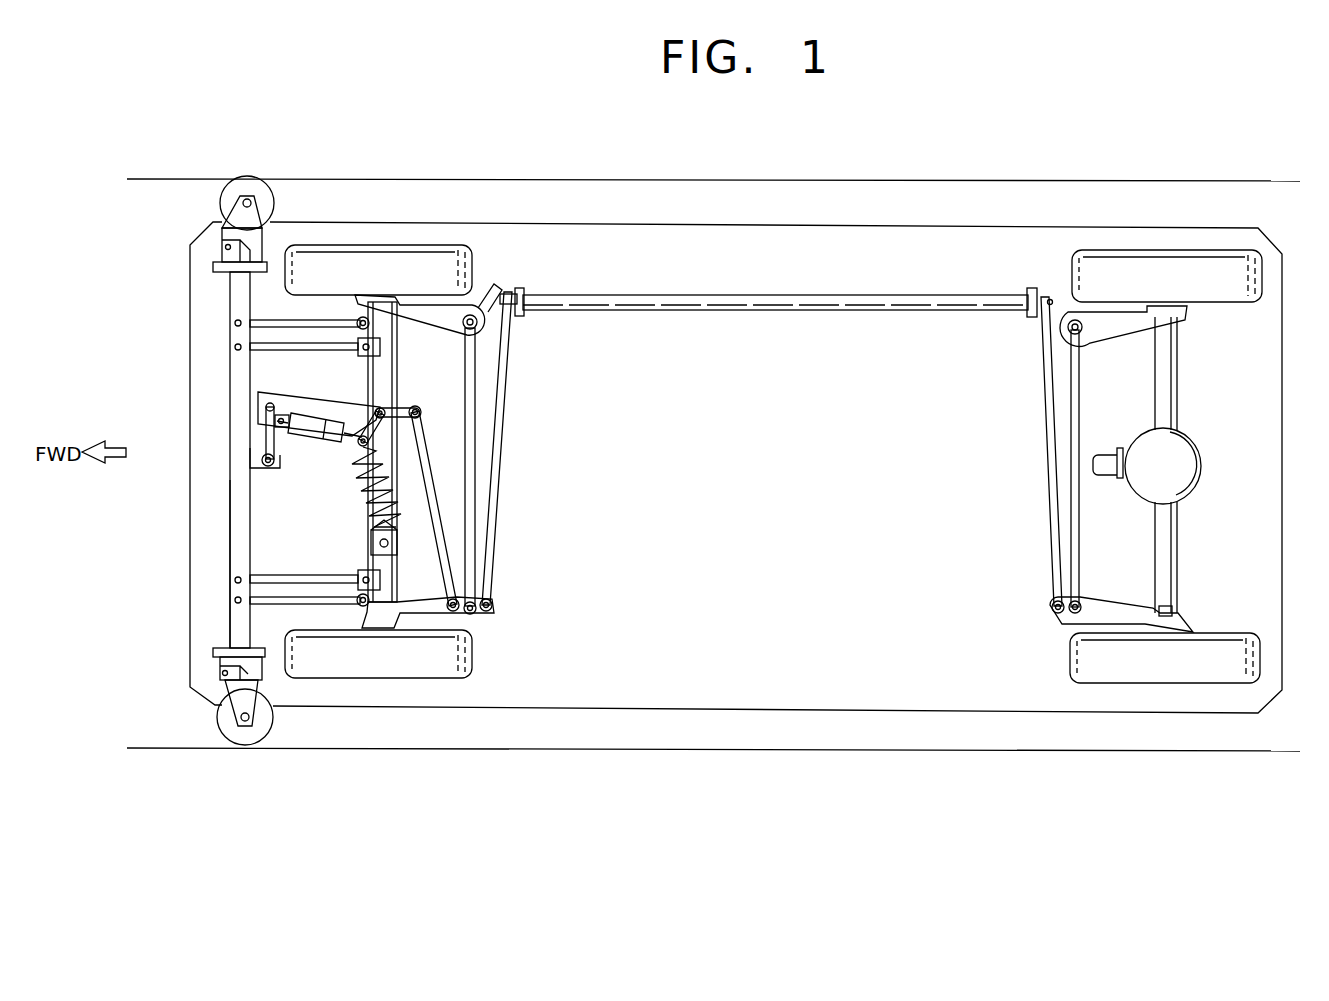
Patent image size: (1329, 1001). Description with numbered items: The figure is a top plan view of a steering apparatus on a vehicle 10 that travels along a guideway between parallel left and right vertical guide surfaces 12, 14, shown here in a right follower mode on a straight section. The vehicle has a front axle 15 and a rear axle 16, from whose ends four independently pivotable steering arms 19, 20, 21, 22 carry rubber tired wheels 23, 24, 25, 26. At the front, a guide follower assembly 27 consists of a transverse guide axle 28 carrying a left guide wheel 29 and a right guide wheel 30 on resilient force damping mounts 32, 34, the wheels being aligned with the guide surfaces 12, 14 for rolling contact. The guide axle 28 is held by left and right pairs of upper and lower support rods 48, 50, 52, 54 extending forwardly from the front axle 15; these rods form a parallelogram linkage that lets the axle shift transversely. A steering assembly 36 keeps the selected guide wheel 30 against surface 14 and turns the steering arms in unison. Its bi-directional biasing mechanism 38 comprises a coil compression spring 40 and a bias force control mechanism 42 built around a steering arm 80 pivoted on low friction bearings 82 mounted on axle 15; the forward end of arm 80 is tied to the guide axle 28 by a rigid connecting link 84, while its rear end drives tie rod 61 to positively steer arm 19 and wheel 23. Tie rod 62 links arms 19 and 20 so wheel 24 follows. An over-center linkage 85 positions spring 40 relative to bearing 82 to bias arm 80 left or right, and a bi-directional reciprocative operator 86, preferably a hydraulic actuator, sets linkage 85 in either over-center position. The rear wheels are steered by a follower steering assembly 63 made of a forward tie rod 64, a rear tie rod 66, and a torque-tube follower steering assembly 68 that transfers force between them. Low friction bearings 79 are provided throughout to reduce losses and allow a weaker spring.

The vehicle 10 is at (873, 218).
The left vertical guide surface 12 is at (545, 750).
The right vertical guide surface 14 is at (512, 176).
The front axle 15 is at (397, 574).
The rear axle 16 is at (1178, 527).
The steering arm 19 is at (486, 611).
The steering arm 20 is at (497, 291).
The steering arm 21 is at (1097, 592).
The steering arm 22 is at (1104, 336).
The rubber tired wheel 23 is at (473, 656).
The rubber tired wheel 24 is at (470, 268).
The rubber tired wheel 25 is at (1235, 643).
The rubber tired wheel 26 is at (1252, 297).
The guide follower assembly 27 is at (226, 373).
The guide axle 28 is at (230, 538).
The left guide wheel 29 is at (271, 721).
The right guide wheel 30 is at (268, 191).
The resilient force damping mount 32 is at (214, 690).
The resilient force damping mount 34 is at (217, 235).
The steering assembly 36 is at (514, 431).
The bi-directional biasing mechanism 38 is at (337, 457).
The coil compression spring 40 is at (358, 492).
The bias force control mechanism 42 is at (355, 450).
The support rod 48 is at (276, 603).
The support rod 50 is at (285, 581).
The support rod 52 is at (300, 349).
The support rod 54 is at (268, 308).
The tie rod 61 is at (432, 493).
The tie rod 62 is at (466, 379).
The follower steering assembly 63 is at (985, 342).
The forward tie rod 64 is at (503, 493).
The rear tie rod 66 is at (1050, 490).
The follower steering assembly 68 is at (728, 311).
The low friction bearings 79 is at (478, 326).
The steering arm 80 is at (330, 398).
The low friction bearings 82 is at (386, 408).
The rigid connecting link 84 is at (266, 440).
The over-center linkage 85 is at (366, 440).
The bi-directional reciprocative operator 86 is at (315, 444).